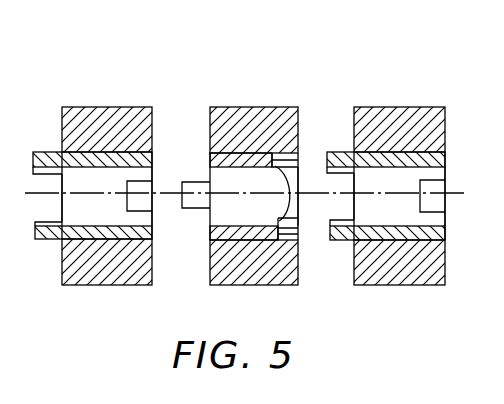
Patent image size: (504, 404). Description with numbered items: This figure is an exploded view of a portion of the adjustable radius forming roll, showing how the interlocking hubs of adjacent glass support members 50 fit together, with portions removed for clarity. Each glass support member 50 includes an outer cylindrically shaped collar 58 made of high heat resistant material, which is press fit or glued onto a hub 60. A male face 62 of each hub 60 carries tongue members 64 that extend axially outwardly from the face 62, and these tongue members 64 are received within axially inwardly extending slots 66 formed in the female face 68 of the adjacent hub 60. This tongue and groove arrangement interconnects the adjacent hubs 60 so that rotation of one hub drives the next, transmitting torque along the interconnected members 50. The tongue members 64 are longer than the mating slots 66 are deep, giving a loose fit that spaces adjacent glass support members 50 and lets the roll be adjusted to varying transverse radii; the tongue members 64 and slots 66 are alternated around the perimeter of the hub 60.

The glass support member 50 is at (234, 55).
The collar 58 is at (107, 107).
The hub 60 is at (210, 158).
The male face 62 is at (60, 207).
The tongue member 64 is at (50, 152).
The slot 66 is at (152, 206).
The female face 68 is at (152, 218).